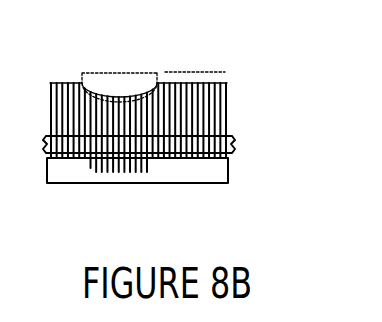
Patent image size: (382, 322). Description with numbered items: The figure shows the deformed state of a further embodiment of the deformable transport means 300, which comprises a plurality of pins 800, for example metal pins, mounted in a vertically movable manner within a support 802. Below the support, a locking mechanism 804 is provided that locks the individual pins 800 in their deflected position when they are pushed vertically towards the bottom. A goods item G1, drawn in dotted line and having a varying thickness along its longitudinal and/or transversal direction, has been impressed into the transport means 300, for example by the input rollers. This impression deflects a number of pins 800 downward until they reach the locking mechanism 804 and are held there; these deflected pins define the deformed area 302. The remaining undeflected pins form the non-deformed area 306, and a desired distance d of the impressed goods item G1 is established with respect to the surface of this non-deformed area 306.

The transport means 300 is at (176, 139).
The deformed area 302 is at (157, 187).
The non-deformed area 306 is at (73, 69).
The pins 800 is at (180, 156).
The support 802 is at (236, 143).
The locking mechanism 804 is at (229, 174).
The goods item G1 is at (119, 83).
The distance d is at (225, 73).